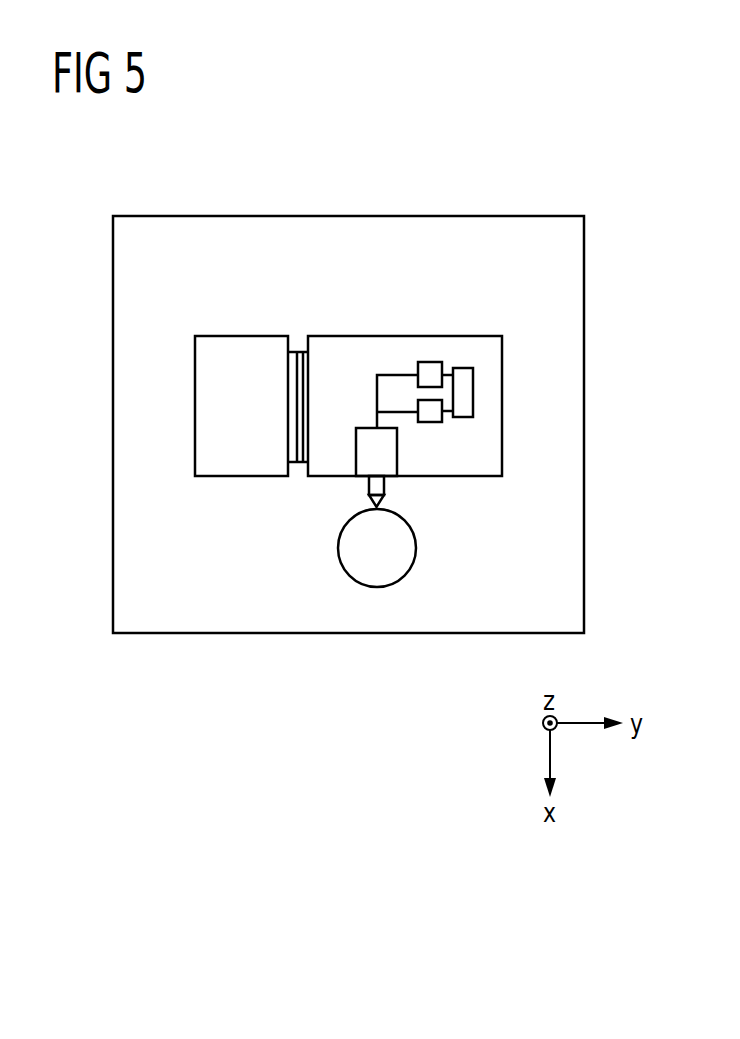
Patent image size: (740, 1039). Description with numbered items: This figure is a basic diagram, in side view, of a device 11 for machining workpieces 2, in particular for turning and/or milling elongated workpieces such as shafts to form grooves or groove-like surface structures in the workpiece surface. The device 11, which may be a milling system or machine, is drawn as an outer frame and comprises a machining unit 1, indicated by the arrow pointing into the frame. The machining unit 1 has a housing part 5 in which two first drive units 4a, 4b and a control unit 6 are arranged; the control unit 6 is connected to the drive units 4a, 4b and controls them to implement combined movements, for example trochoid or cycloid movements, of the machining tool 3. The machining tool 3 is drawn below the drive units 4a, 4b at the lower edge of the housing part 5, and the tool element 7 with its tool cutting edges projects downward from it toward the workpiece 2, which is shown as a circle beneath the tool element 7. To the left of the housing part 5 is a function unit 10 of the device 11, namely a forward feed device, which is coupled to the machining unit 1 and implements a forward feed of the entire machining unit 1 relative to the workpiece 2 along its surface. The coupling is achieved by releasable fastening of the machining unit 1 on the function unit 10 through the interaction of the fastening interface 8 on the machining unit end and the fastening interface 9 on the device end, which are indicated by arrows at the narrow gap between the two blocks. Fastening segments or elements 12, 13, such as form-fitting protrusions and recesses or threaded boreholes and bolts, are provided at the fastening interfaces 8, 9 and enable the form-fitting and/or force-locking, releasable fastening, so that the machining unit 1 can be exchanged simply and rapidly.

The machining unit 1 is at (385, 297).
The workpiece 2 is at (415, 566).
The machining tool 3 is at (366, 427).
The first drive unit 4a is at (431, 361).
The first drive unit 4b is at (428, 423).
The housing part 5 is at (474, 335).
The control unit 6 is at (474, 387).
The tool element 7 is at (385, 484).
The fastening interface 8 is at (303, 331).
The fastening interface 9 is at (292, 331).
The function unit 10 is at (220, 335).
The device 11 is at (552, 216).
The fastening element 12 is at (305, 461).
The fastening element 13 is at (291, 461).